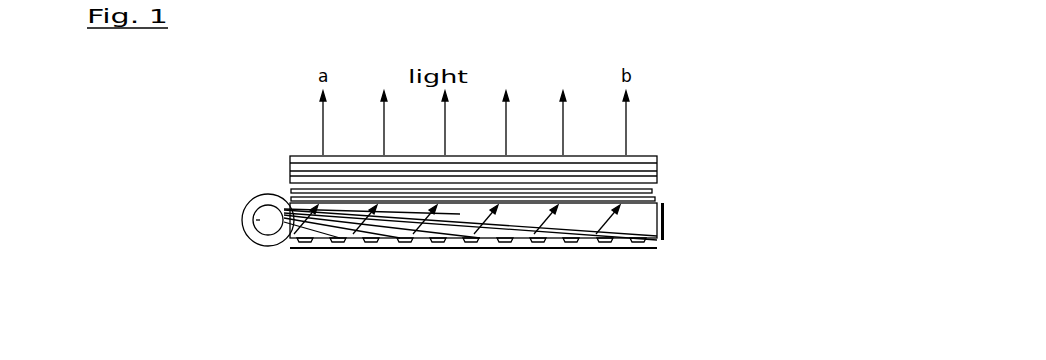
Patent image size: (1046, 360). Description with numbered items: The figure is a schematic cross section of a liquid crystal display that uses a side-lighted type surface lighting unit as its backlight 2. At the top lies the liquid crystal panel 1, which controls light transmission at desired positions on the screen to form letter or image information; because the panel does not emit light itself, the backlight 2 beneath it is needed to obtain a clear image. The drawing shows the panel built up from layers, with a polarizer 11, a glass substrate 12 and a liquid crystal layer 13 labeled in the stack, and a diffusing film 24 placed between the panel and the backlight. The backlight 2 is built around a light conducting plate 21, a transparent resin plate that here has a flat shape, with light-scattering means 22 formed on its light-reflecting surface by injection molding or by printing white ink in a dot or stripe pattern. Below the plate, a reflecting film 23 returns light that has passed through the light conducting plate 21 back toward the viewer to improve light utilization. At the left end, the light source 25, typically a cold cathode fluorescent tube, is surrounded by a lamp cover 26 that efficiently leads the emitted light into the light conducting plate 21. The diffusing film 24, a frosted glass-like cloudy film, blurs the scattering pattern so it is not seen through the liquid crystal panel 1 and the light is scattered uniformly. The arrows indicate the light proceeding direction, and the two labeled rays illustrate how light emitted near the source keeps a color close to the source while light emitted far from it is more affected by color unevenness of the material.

The liquid crystal panel 1 is at (273, 169).
The backlight 2 is at (662, 190).
The polarizer 11 is at (637, 157).
The glass substrate 12 is at (503, 180).
The liquid crystal layer 13 is at (588, 165).
The light conducting plate 21 is at (422, 240).
The light-scattering means 22 is at (553, 250).
The reflecting film 23 is at (666, 228).
The diffusing film 24 is at (663, 156).
The light source 25 is at (253, 222).
The lamp cover 26 is at (257, 241).